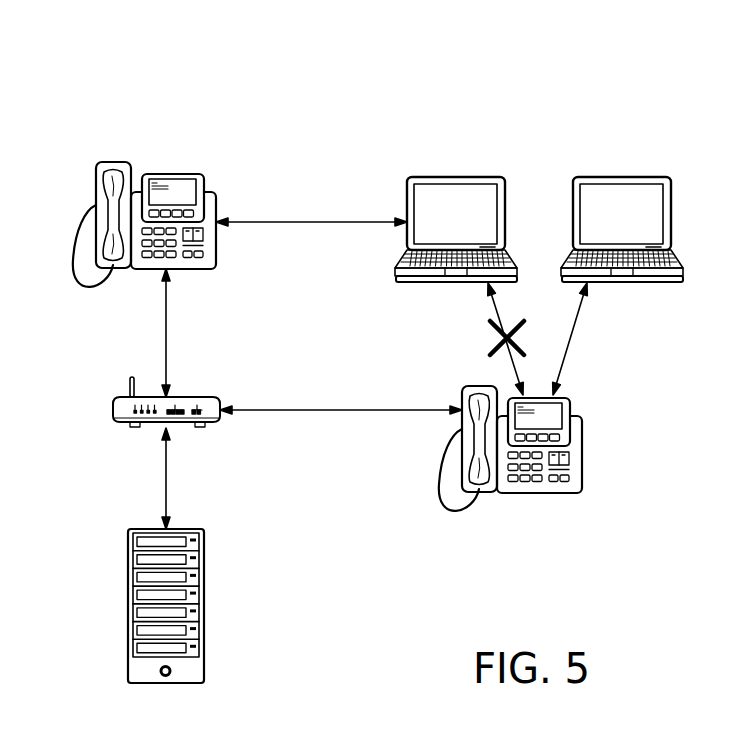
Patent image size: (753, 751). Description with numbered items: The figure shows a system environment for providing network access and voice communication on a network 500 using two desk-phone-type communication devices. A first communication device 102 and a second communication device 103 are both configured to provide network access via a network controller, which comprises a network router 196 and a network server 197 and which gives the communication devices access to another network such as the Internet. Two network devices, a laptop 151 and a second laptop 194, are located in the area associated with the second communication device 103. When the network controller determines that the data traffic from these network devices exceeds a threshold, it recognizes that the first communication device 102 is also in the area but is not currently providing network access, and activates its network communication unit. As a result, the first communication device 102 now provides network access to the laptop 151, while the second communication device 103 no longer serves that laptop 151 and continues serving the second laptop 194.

The network 500 is at (233, 69).
The first communication device 102 is at (96, 197).
The second communication device 103 is at (582, 456).
The laptop 151 is at (456, 177).
The second laptop 194 is at (621, 177).
The network router 196 is at (113, 407).
The network server 197 is at (128, 605).